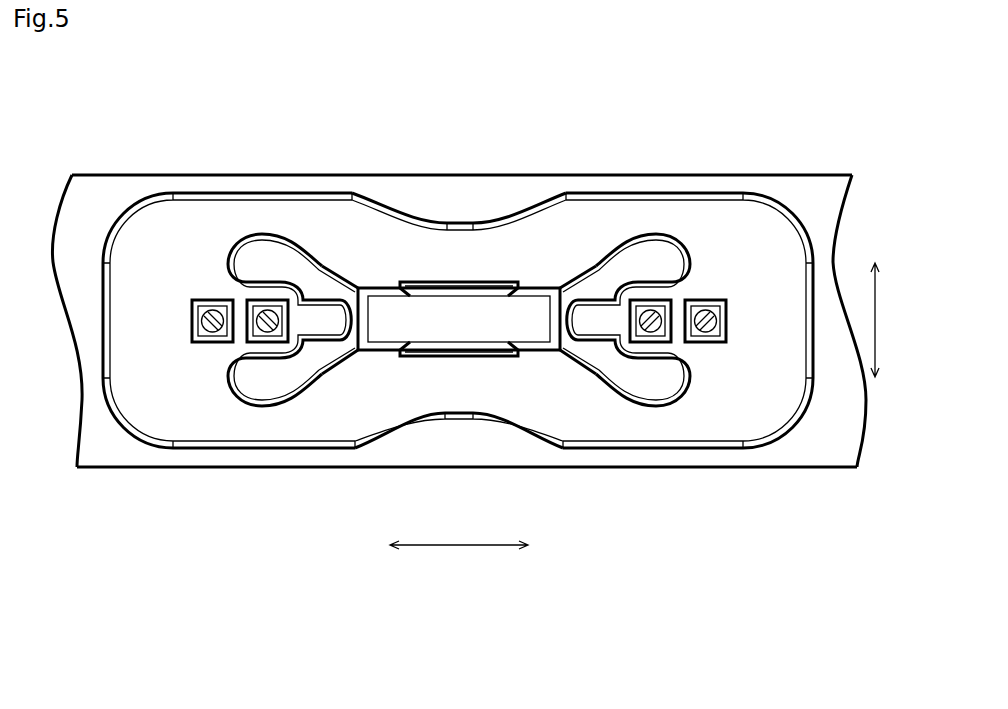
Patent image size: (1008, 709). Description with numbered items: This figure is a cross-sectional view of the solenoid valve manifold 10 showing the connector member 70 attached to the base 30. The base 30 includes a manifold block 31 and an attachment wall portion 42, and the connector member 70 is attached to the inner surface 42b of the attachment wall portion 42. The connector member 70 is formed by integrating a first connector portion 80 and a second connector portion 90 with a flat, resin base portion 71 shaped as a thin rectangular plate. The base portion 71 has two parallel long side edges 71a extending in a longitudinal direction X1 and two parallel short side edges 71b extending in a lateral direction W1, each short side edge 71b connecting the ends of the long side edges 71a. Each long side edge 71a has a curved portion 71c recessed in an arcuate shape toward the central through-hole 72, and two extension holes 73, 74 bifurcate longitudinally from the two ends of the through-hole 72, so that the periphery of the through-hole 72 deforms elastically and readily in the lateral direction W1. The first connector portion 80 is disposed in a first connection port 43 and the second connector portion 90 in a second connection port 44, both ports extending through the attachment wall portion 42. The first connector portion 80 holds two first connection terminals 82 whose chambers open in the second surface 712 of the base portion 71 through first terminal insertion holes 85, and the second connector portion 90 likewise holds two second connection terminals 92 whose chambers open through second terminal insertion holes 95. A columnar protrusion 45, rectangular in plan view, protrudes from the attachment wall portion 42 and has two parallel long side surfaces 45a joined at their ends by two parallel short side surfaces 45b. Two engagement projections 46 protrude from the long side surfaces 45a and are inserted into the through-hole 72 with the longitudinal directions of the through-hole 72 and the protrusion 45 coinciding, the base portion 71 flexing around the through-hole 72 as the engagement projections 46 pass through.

The solenoid valve manifold 10 is at (848, 137).
The base 30 is at (65, 163).
The manifold block 31 is at (812, 170).
The attachment wall portion 42 is at (138, 182).
The inner surface 42b is at (100, 457).
The first connection port 43 is at (322, 270).
The second connection port 44 is at (590, 282).
The protrusion 45 is at (383, 337).
The long side surfaces 45a is at (537, 287).
The short side surfaces 45b is at (334, 365).
The engagement projections 46 is at (460, 282).
The connector member 70 is at (127, 190).
The base portion 71 is at (158, 450).
The long side edges 71a is at (605, 192).
The short side edges 71b is at (103, 320).
The curved portion 71c is at (403, 212).
The second surface 712 is at (748, 393).
The through-hole 72 is at (381, 300).
The extension hole 73 is at (265, 245).
The extension hole 74 is at (648, 247).
The first connector portion 80 is at (188, 295).
The first connection terminals 82 is at (267, 342).
The first terminal insertion hole 85 is at (272, 300).
The second connector portion 90 is at (732, 293).
The second connection terminals 92 is at (658, 342).
The second terminal insertion hole 95 is at (645, 300).
The lateral direction W1 is at (877, 318).
The longitudinal direction X1 is at (458, 547).